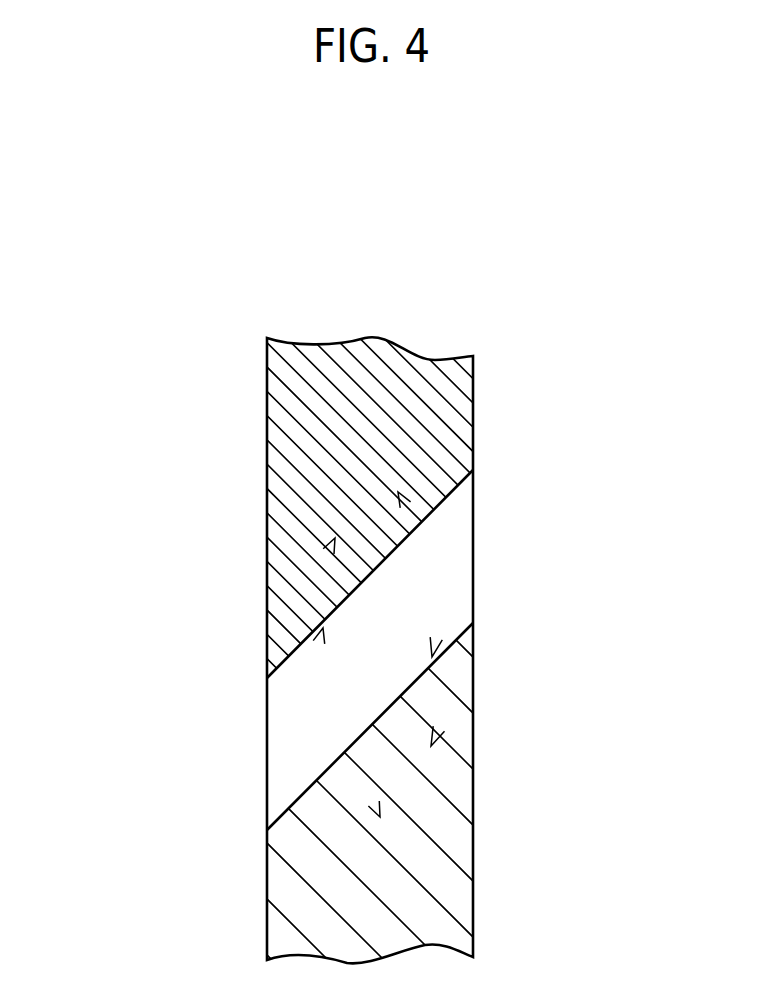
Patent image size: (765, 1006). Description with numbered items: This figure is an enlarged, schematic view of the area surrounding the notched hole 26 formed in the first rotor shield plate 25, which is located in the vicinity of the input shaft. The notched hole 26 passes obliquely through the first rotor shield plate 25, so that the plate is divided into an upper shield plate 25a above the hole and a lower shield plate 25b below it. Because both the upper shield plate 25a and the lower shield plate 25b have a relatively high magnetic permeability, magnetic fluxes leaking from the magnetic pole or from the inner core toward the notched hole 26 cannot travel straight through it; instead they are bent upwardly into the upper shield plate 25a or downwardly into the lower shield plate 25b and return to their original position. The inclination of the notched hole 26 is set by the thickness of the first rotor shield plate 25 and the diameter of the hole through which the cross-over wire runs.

The first rotor shield plate 25 is at (433, 310).
The upper shield plate 25a is at (475, 408).
The lower shield plate 25b is at (460, 902).
The notched hole 26 is at (457, 510).